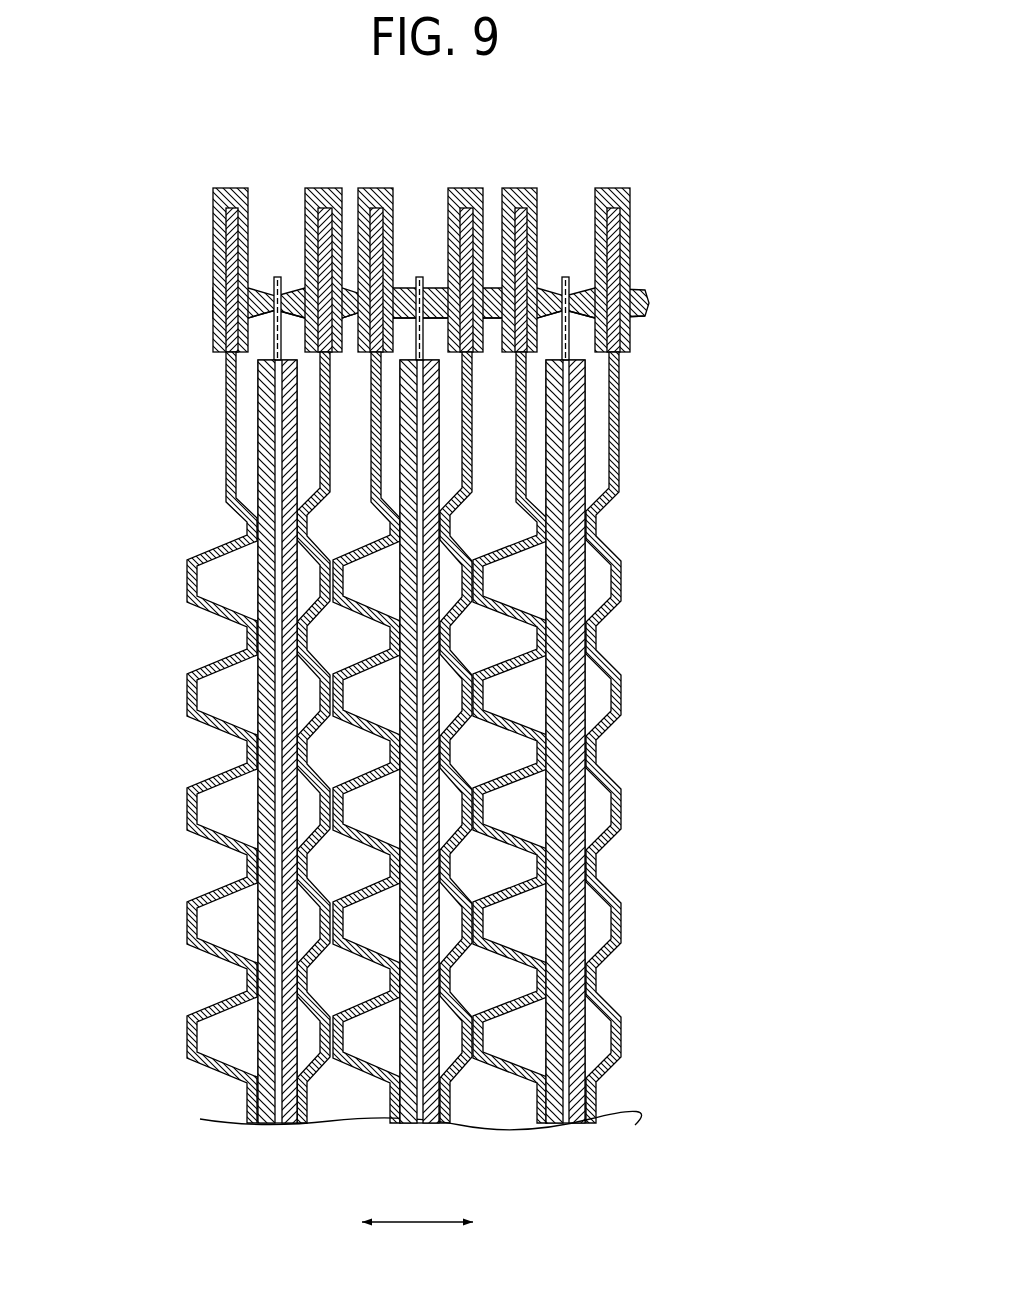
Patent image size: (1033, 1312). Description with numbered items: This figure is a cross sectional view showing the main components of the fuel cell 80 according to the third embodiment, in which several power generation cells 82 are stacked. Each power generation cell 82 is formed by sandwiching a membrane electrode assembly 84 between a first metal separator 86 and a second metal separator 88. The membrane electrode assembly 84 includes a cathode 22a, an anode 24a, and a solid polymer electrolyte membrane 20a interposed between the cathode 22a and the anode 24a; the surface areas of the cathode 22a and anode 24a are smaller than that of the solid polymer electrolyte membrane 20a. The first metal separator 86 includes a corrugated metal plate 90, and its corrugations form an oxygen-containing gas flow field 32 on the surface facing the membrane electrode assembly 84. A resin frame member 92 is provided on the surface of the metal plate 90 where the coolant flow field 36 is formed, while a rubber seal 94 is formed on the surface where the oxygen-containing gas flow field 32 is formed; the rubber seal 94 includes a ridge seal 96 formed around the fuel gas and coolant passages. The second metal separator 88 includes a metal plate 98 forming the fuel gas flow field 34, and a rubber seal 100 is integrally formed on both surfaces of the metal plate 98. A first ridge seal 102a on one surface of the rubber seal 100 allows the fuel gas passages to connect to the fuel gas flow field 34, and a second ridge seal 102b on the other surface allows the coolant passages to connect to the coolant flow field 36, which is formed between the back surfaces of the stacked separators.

The fuel cell 80 is at (258, 71).
The resin frame member 92 is at (385, 188).
The rubber seal 94 is at (404, 186).
The rubber seal 100 is at (478, 184).
The ridge seal 96 is at (403, 285).
The first ridge seal 102a is at (433, 287).
The second ridge seal 102b is at (530, 318).
The corrugated metal plate 90 is at (382, 460).
The metal plate 98 is at (475, 480).
The oxygen-containing gas flow field 32 is at (362, 696).
The fuel gas flow field 34 is at (453, 694).
The coolant flow field 36 is at (357, 757).
The anode 24a is at (620, 800).
The solid polymer electrolyte membrane 20a is at (587, 842).
The cathode 22a is at (597, 870).
The membrane electrode assembly 84 is at (728, 777).
The first metal separator 86 is at (358, 929).
The second metal separator 88 is at (472, 1091).
The power generation cell 82 is at (718, 940).